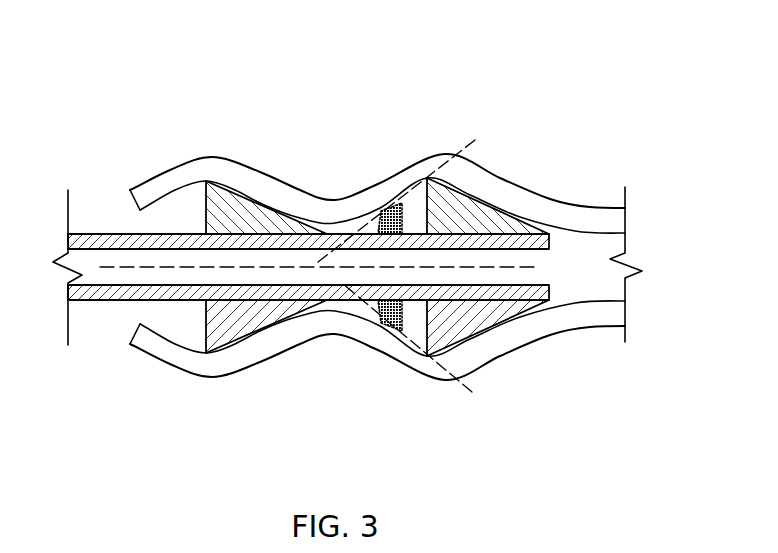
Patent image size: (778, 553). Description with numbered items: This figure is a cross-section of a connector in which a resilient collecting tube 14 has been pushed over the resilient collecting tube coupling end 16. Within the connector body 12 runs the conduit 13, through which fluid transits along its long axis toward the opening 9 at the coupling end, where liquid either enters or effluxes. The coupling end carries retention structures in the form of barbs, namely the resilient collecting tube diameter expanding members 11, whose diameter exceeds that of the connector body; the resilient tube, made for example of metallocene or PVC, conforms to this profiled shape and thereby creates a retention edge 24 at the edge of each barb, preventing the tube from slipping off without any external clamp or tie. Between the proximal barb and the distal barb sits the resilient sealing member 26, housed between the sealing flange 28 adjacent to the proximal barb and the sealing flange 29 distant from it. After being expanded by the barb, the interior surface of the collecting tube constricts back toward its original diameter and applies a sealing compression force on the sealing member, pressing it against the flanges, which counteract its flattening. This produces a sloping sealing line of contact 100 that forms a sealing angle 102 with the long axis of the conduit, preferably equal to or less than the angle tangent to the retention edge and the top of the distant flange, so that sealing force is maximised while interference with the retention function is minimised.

The resilient collecting tube coupling end 16 is at (624, 68).
The retention edge 24 is at (197, 157).
The resilient collecting tube diameter expanding member 11 is at (233, 210).
The connector body 12 is at (95, 233).
The conduit 13 is at (95, 278).
The opening 9 is at (544, 272).
The resilient collecting tube 14 is at (325, 207).
The sealing angle 102 is at (346, 220).
The sealing flange 29 is at (380, 228).
The resilient sealing member 26 is at (388, 203).
The sealing flange 28 is at (416, 208).
The sealing line of contact 100 is at (475, 135).